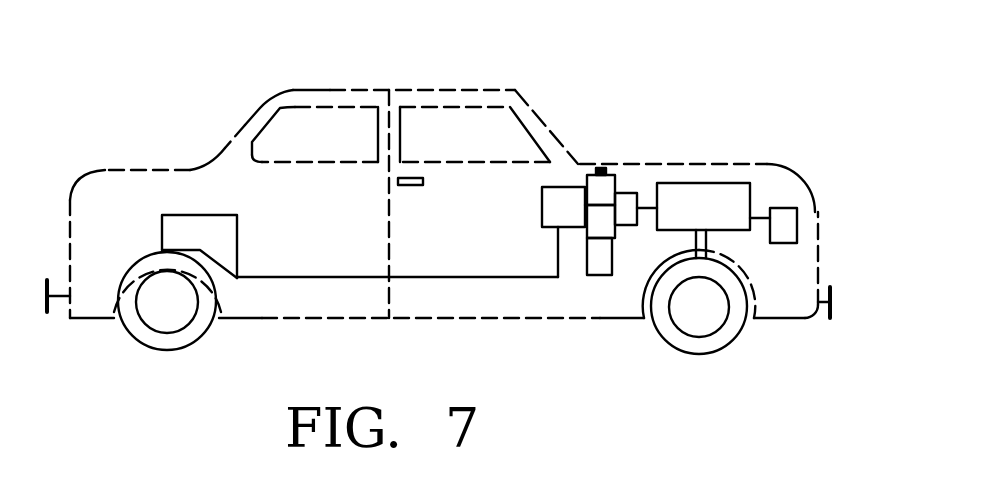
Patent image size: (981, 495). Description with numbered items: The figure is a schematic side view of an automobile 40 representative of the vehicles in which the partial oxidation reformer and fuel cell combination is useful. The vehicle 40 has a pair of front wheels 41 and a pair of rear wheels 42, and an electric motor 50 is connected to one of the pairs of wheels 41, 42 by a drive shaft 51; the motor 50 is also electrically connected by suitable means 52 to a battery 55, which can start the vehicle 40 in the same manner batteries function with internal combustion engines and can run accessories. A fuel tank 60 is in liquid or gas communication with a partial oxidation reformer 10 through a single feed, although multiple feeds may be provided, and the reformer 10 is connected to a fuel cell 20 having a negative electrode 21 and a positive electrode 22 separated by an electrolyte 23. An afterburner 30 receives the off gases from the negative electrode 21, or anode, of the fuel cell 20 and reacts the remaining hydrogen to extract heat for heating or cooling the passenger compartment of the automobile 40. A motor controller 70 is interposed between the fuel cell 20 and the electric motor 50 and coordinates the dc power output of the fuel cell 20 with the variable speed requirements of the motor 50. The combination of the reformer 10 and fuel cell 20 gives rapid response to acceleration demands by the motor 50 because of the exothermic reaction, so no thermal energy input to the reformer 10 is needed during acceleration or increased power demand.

The automobile 40 is at (192, 69).
The rear wheels 42 is at (127, 327).
The front wheels 41 is at (717, 348).
The drive shaft 51 is at (640, 320).
The fuel tank 60 is at (237, 249).
The partial oxidation reformer 10 is at (541, 205).
The fuel cell 20 is at (601, 168).
The positive electrode 22 is at (612, 174).
The electrolyte 23 is at (586, 178).
The negative electrode 21 is at (587, 252).
The afterburner 30 is at (600, 276).
The motor controller 70 is at (627, 193).
The electric motor 50 is at (710, 183).
The electrical connecting means 52 is at (758, 216).
The battery 55 is at (798, 225).